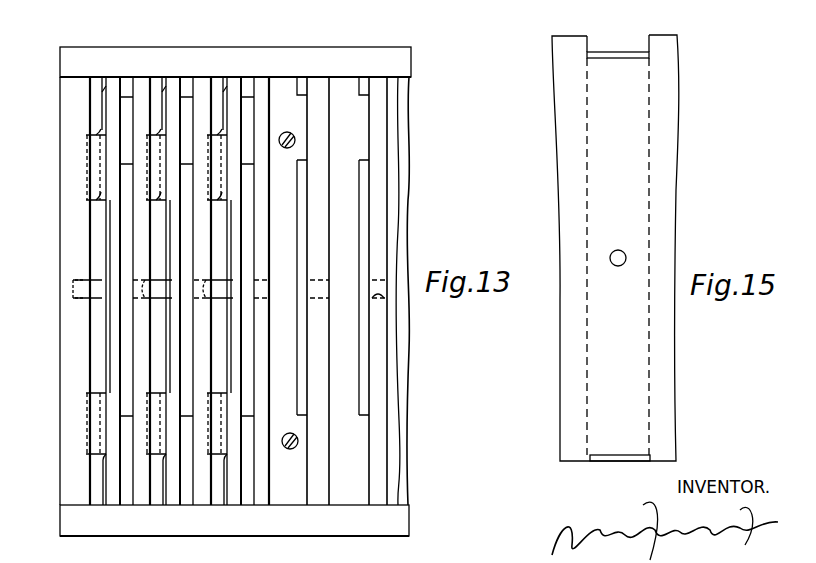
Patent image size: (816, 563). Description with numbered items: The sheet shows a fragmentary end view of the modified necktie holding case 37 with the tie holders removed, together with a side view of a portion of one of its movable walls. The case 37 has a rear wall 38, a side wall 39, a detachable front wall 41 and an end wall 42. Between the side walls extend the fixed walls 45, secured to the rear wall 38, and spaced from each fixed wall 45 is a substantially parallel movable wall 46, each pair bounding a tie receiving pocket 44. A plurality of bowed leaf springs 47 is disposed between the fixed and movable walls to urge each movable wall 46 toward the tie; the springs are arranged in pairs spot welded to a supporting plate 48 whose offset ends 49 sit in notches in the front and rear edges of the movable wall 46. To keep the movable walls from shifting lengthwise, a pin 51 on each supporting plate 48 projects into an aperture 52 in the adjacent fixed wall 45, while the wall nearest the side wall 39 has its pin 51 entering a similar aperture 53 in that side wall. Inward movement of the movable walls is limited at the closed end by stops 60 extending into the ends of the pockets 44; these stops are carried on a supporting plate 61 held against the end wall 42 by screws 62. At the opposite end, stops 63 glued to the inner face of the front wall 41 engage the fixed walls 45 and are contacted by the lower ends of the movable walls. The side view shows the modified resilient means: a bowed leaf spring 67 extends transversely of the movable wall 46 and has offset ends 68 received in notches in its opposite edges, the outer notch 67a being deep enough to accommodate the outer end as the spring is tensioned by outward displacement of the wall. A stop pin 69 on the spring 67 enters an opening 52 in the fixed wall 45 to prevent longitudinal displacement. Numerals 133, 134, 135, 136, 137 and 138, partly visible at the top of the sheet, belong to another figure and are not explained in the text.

In FIG. 13, the case 37 is at (426, 352).
In FIG. 13, the rear wall 38 is at (70, 519).
In FIG. 13, the side wall 39 is at (63, 401).
In FIG. 13, the front wall 41 is at (366, 54).
In FIG. 13, the end wall 42 is at (410, 185).
In FIG. 13, the tie receiving pocket 44 is at (128, 110).
In FIG. 13, the fixed wall 45 is at (267, 100).
In FIG. 13, the movable wall 46 is at (230, 108).
In FIG. 15, the movable wall 46 is at (662, 175).
In FIG. 13, the bowed leaf spring 47 is at (100, 202).
In FIG. 13, the supporting plate 48 is at (106, 322).
In FIG. 13, the offset end 49 is at (105, 85).
In FIG. 13, the pin 51 is at (93, 300).
In FIG. 13, the aperture 52 is at (382, 293).
In FIG. 13, the aperture 53 is at (76, 290).
In FIG. 13, the stop 60 is at (365, 385).
In FIG. 13, the supporting plate 61 is at (397, 145).
In FIG. 13, the screw 62 is at (298, 445).
In FIG. 13, the stop 63 is at (363, 85).
In FIG. 15, the bowed leaf spring 67 is at (650, 120).
In FIG. 15, the outer notch 67a is at (650, 37).
In FIG. 15, the offset end 68 is at (613, 52).
In FIG. 15, the stop pin 69 is at (625, 252).
In FIG. 13, the numeral 133 is at (283, 10).
In FIG. 13, the numeral 134 is at (196, 6).
In FIG. 13, the numeral 135 is at (278, 6).
In FIG. 13, the numeral 136 is at (370, 6).
In FIG. 13, the numeral 137 is at (516, 7).
In FIG. 13, the numeral 138 is at (426, 8).